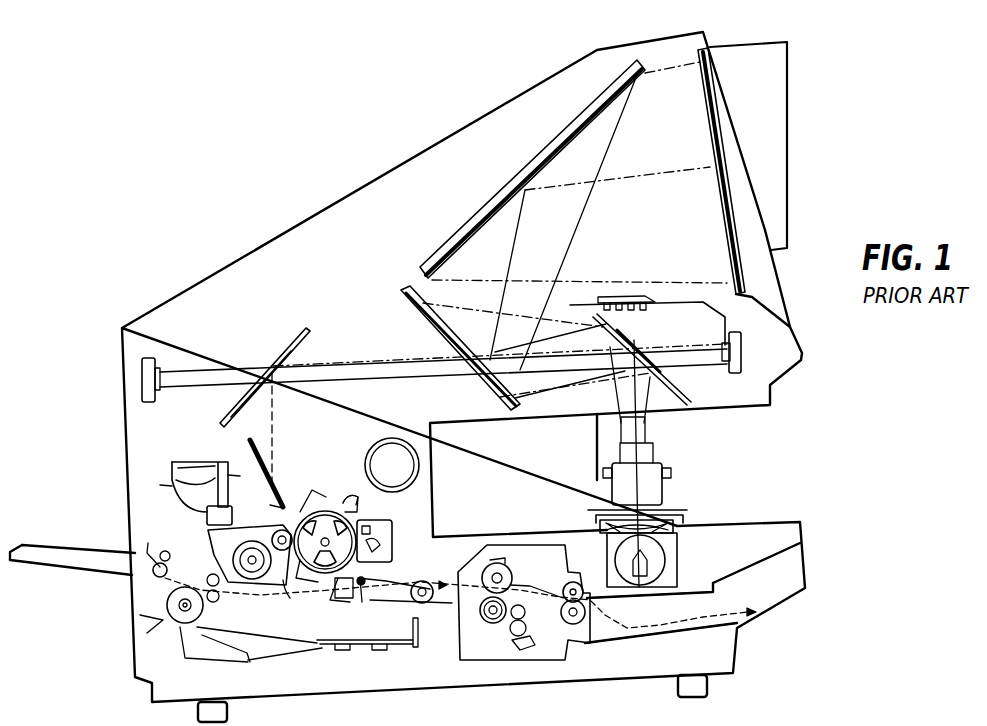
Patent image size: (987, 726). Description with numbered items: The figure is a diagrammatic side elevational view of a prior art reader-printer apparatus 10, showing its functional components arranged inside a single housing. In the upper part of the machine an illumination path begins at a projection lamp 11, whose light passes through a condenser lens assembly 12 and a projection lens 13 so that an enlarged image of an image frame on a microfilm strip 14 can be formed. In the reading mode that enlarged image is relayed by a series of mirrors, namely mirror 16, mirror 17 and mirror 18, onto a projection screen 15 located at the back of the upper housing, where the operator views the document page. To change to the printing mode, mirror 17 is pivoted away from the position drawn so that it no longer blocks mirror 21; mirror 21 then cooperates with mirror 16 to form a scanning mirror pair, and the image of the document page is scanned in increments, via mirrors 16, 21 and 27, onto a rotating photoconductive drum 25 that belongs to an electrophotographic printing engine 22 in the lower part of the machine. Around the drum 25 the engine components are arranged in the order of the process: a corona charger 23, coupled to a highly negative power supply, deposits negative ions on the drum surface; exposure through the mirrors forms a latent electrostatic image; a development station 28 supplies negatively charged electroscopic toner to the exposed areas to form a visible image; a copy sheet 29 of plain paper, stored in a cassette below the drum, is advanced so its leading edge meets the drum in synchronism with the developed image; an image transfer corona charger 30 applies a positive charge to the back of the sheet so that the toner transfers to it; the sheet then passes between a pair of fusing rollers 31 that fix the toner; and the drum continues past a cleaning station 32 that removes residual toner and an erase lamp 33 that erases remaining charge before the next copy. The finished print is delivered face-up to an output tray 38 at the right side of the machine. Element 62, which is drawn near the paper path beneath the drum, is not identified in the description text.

The reader-printer apparatus 10 is at (386, 147).
The projection lamp 11 is at (637, 577).
The condenser lens assembly 12 is at (655, 529).
The projection lens 13 is at (651, 492).
The microfilm strip 14 is at (680, 508).
The projection screen 15 is at (722, 143).
The mirror 16 is at (687, 398).
The mirror 17 is at (490, 383).
The mirror 18 is at (508, 193).
The mirror 21 is at (288, 340).
The electrophotographic printing engine 22 is at (250, 484).
The corona charger 23 is at (328, 507).
The photoconductive drum 25 is at (366, 493).
The mirror 27 is at (249, 437).
The development station 28 is at (262, 506).
The copy sheet 29 is at (248, 594).
The image transfer corona charger 30 is at (328, 598).
The fusing rollers 31 is at (494, 622).
The cleaning station 32 is at (390, 541).
The erase lamp 33 is at (360, 513).
The output tray 38 is at (737, 630).
The transfer unit 62 is at (290, 598).